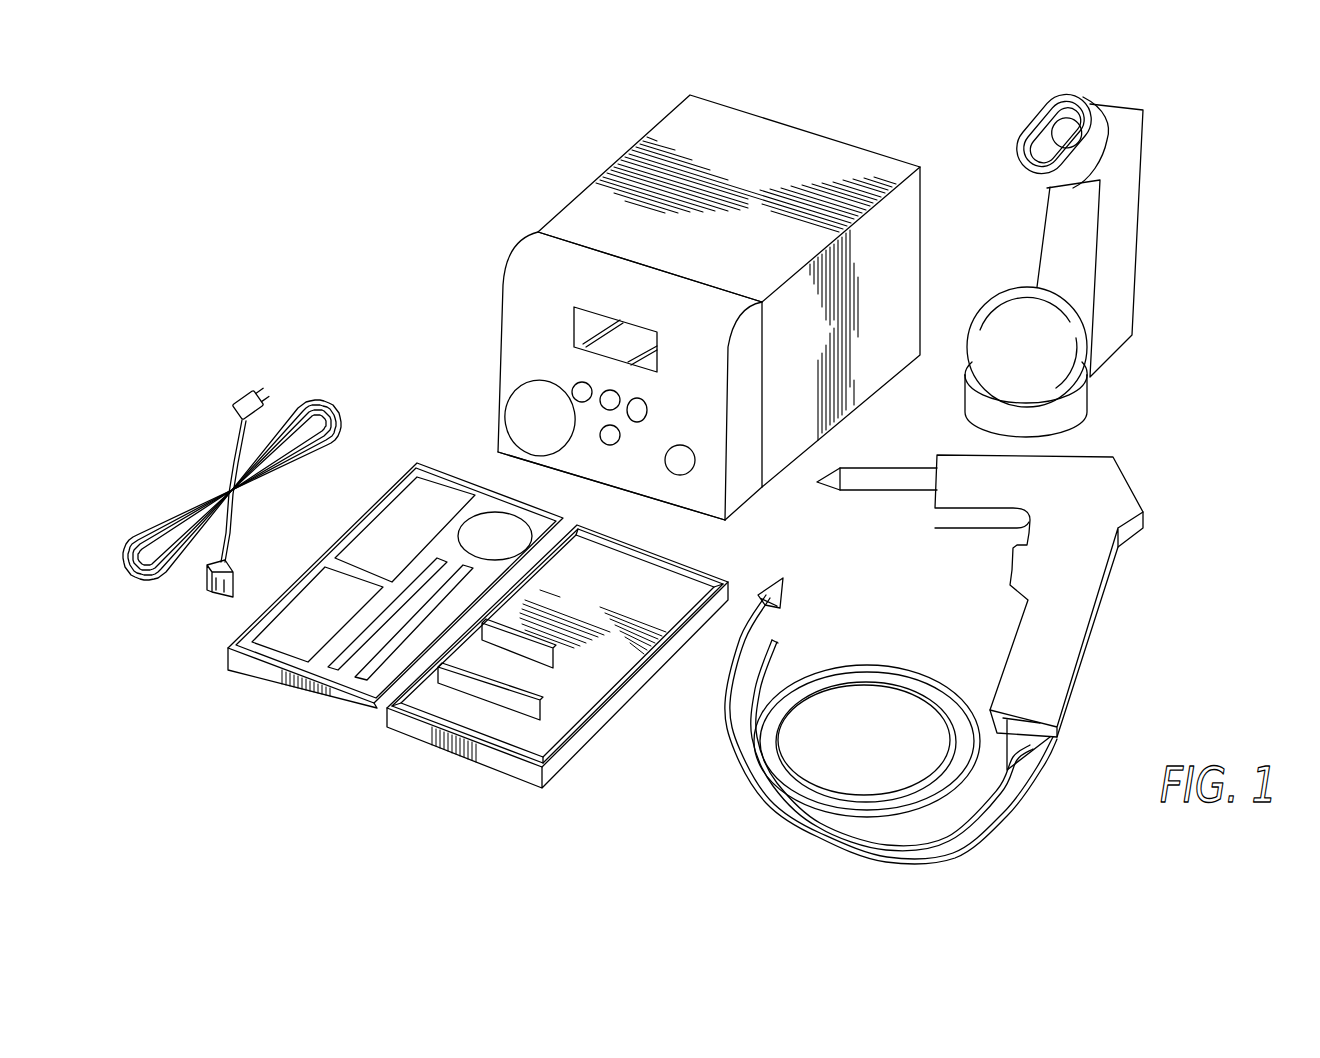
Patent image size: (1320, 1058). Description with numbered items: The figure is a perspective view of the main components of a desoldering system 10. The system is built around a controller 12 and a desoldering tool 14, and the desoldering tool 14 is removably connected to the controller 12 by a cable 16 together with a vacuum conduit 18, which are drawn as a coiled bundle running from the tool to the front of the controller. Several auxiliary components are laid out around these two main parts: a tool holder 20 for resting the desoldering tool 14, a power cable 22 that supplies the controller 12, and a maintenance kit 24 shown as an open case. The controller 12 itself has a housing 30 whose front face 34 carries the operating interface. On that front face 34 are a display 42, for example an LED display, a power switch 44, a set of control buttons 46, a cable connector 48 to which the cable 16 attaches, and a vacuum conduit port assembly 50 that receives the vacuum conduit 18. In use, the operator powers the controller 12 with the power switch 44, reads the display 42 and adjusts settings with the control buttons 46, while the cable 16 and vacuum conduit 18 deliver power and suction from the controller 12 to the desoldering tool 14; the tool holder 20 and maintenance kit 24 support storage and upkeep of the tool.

The desoldering system 10 is at (313, 255).
The controller 12 is at (641, 163).
The desoldering tool 14 is at (1053, 623).
The cable 16 is at (786, 592).
The vacuum conduit 18 is at (782, 647).
The tool holder 20 is at (1125, 273).
The power cable 22 is at (220, 465).
The maintenance kit 24 is at (365, 742).
The housing 30 is at (511, 246).
The front face 34 is at (702, 492).
The display 42 is at (585, 328).
The power switch 44 is at (680, 463).
The control buttons 46 is at (606, 391).
The cable connector 48 is at (608, 444).
The vacuum conduit port assembly 50 is at (535, 410).